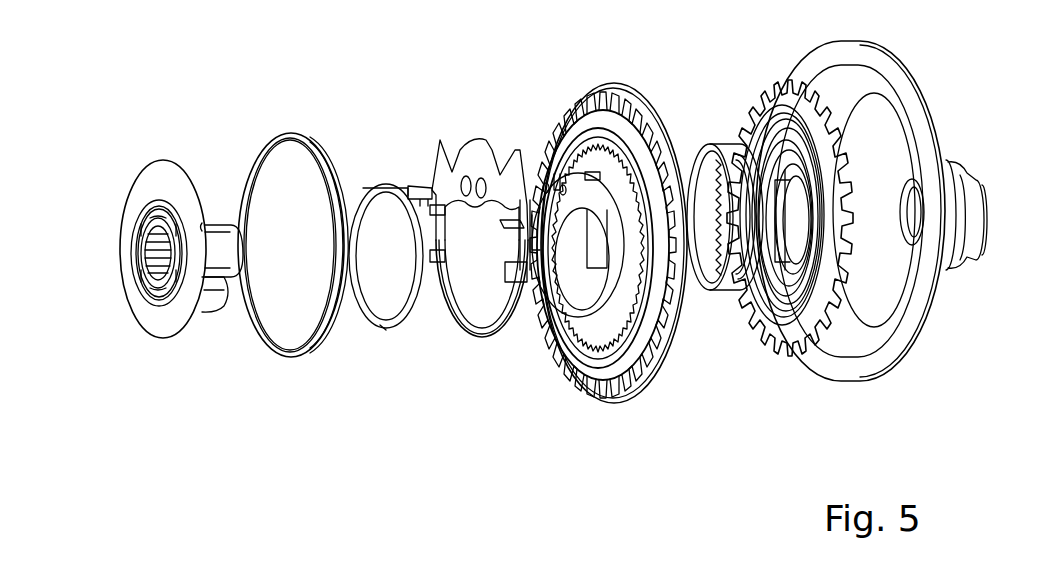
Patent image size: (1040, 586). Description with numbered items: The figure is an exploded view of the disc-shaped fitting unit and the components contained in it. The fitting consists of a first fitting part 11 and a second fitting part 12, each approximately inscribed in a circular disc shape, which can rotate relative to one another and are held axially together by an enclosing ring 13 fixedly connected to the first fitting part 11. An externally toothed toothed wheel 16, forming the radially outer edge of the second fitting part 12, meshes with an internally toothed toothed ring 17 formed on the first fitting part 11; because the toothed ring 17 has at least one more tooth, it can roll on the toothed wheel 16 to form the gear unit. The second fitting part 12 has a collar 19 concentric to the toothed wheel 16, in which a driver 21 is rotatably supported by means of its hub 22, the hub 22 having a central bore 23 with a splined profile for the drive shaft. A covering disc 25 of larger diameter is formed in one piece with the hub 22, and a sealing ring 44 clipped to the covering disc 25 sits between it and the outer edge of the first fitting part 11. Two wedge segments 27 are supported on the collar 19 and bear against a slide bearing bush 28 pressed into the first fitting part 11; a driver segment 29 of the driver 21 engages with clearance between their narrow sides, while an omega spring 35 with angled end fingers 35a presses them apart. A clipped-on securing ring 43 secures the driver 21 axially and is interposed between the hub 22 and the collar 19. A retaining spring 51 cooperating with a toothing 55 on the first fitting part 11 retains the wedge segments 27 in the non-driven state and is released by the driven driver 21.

The first fitting part 11 is at (608, 412).
The second fitting part 12 is at (790, 370).
The enclosing ring 13 is at (847, 392).
The toothed wheel 16 is at (742, 95).
The toothed ring 17 is at (585, 83).
The collar 19 is at (797, 240).
The driver 21 is at (163, 348).
The hub 22 is at (225, 226).
The bore 23 is at (150, 256).
The covering disc 25 is at (162, 160).
The wedge segment 27 is at (532, 293).
The slide bearing bush 28 is at (714, 304).
The driver segment 29 is at (205, 313).
The spring 35 is at (383, 328).
The end finger 35a is at (419, 187).
The securing ring 43 is at (953, 270).
The sealing ring 44 is at (291, 357).
The retaining spring 51 is at (473, 333).
The toothing 55 is at (563, 162).